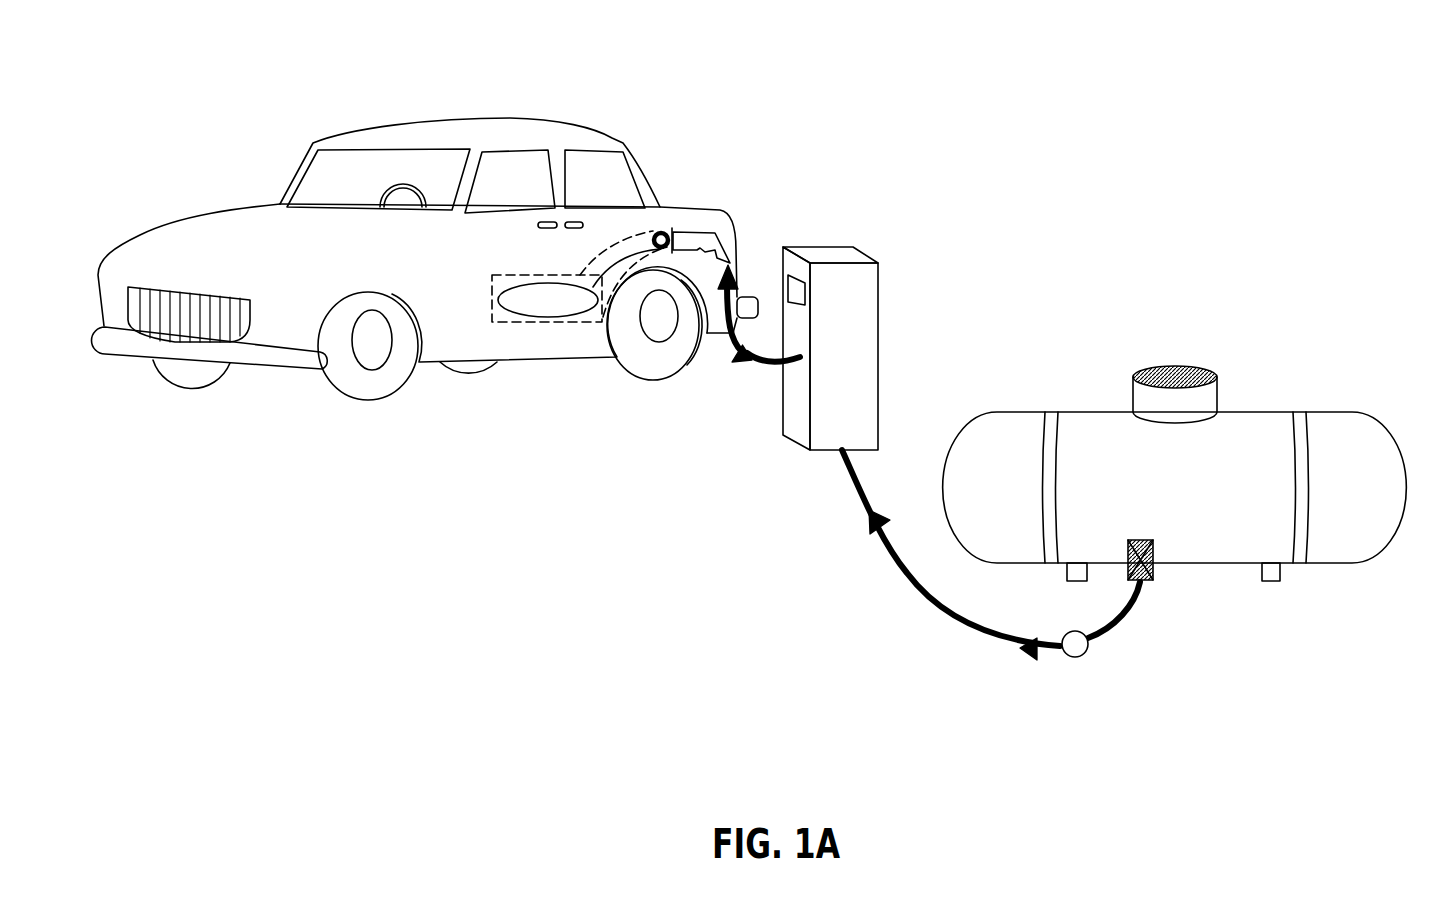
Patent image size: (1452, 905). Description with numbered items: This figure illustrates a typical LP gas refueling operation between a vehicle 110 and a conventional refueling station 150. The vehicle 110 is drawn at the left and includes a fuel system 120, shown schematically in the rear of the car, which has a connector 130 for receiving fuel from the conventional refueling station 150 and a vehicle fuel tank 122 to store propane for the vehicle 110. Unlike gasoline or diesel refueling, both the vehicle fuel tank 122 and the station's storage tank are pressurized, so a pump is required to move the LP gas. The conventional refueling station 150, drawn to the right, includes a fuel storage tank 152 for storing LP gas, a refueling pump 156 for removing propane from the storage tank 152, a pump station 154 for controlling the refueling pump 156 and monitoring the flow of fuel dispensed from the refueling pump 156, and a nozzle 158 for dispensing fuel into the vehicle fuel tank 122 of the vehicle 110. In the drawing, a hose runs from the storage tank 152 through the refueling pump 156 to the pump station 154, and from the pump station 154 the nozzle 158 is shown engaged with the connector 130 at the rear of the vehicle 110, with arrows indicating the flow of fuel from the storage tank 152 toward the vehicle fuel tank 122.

The vehicle 110 is at (527, 118).
The fuel system 120 is at (513, 362).
The vehicle fuel tank 122 is at (568, 358).
The connector 130 is at (668, 204).
The conventional refueling station 150 is at (1143, 147).
The fuel storage tank 152 is at (1372, 420).
The pump station 154 is at (872, 256).
The refueling pump 156 is at (1088, 653).
The nozzle 158 is at (711, 210).